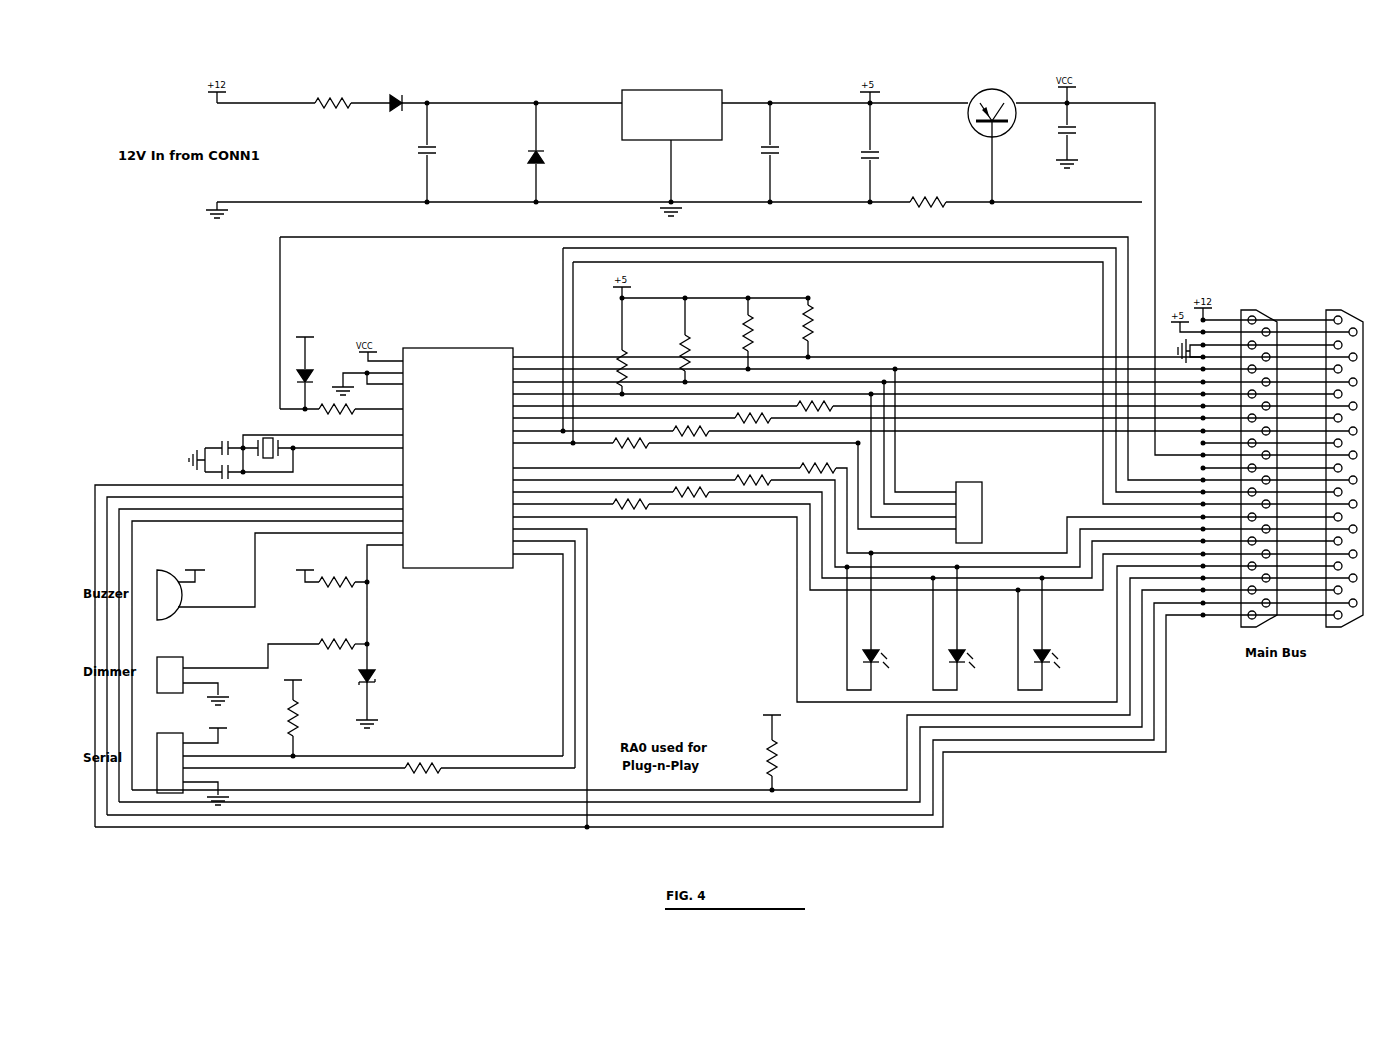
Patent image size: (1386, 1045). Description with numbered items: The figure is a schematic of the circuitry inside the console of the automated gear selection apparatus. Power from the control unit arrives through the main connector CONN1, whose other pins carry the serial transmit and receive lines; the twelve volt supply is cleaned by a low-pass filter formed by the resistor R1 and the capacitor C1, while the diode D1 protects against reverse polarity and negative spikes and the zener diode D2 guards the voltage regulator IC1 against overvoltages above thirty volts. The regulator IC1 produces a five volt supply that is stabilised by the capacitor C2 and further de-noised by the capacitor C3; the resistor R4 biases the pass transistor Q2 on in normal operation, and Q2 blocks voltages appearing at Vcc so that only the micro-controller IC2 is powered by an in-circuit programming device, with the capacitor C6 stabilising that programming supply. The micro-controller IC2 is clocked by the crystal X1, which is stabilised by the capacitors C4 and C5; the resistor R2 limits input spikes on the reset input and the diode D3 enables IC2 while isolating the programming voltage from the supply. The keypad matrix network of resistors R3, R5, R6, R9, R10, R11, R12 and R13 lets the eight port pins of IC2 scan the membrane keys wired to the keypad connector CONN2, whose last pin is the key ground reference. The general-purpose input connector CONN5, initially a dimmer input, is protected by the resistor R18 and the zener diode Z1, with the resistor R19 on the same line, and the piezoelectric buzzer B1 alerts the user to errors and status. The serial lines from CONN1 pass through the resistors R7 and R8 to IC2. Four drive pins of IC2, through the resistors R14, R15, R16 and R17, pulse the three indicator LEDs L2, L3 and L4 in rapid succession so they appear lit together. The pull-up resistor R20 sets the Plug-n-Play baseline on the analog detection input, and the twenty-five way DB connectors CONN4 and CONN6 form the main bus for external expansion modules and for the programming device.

The resistor R1 is at (333, 84).
The diode D1 is at (400, 86).
The capacitor C1 is at (452, 152).
The zener diode D2 is at (553, 152).
The voltage regulator IC1 is at (671, 137).
The capacitor C2 is at (792, 152).
The capacitor C3 is at (894, 152).
The pass transistor Q2 is at (988, 131).
The capacitor C6 is at (1089, 135).
The resistor R4 is at (936, 217).
The micro-controller IC2 is at (459, 442).
The resistor R2 is at (347, 410).
The diode D3 is at (275, 367).
The crystal X1 is at (256, 430).
The capacitor C4 is at (171, 448).
The capacitor C5 is at (171, 472).
The piezoelectric buzzer B1 is at (181, 578).
The general-purpose input connector CONN5 is at (238, 663).
The resistor R19 is at (331, 562).
The resistor R18 is at (342, 625).
The zener diode Z1 is at (383, 689).
The resistor R7 is at (314, 712).
The main connector CONN1 is at (366, 751).
The resistor R8 is at (423, 755).
The resistor R9 is at (815, 385).
The resistor R6 is at (753, 397).
The resistor R5 is at (691, 410).
The resistor R3 is at (631, 423).
The resistor R17 is at (818, 448).
The resistor R16 is at (753, 461).
The resistor R15 is at (691, 473).
The resistor R14 is at (631, 485).
The resistor R10 is at (642, 346).
The resistor R11 is at (705, 340).
The resistor R12 is at (767, 333).
The resistor R13 is at (829, 327).
The keypad connector CONN2 is at (994, 495).
The LED L4 is at (891, 621).
The LED L3 is at (977, 628).
The LED L2 is at (1062, 634).
The pull-up resistor R20 is at (791, 747).
The DB connector CONN6 is at (1253, 453).
The DB connector CONN4 is at (1338, 453).